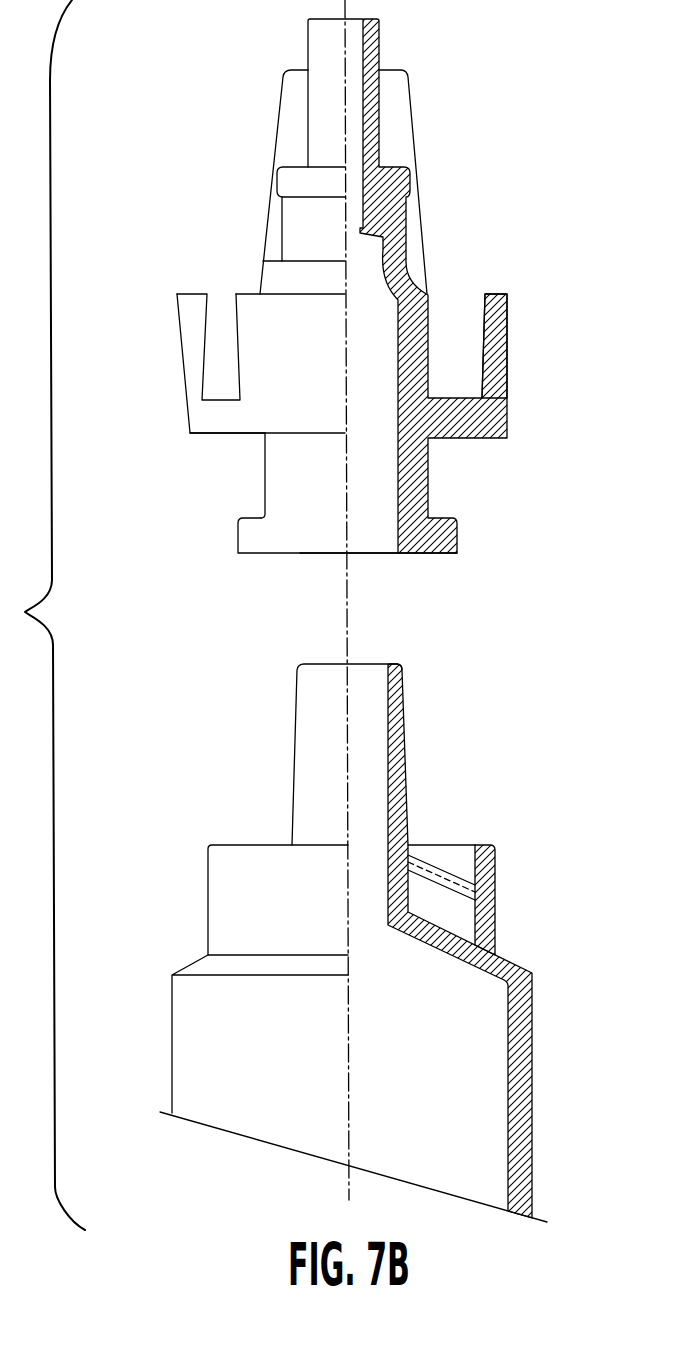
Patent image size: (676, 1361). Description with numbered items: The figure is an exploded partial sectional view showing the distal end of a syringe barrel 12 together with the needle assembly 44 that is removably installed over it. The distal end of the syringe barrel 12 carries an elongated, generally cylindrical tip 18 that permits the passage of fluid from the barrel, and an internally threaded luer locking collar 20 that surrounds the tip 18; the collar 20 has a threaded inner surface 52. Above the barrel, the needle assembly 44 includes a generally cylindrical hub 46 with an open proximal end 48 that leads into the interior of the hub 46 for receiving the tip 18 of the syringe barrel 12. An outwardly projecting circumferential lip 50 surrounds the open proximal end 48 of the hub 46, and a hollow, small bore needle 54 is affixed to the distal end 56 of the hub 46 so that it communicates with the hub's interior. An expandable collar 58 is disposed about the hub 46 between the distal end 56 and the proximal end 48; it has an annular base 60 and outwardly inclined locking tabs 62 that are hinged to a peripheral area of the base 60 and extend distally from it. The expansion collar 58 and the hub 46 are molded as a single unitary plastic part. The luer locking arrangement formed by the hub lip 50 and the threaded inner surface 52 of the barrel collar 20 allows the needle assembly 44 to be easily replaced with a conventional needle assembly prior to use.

The needle assembly 44 is at (213, 67).
The hollow needle 54 is at (307, 48).
The distal end 56 is at (297, 163).
The locking tabs 62 is at (252, 303).
The expandable collar 58 is at (190, 418).
The annular base 60 is at (223, 437).
The hub 46 is at (265, 488).
The circumferential lip 50 is at (238, 540).
The open proximal end 48 is at (372, 542).
The tip 18 is at (292, 755).
The threaded inner surface 52 is at (440, 873).
The luer locking collar 20 is at (208, 900).
The syringe barrel 12 is at (172, 1007).